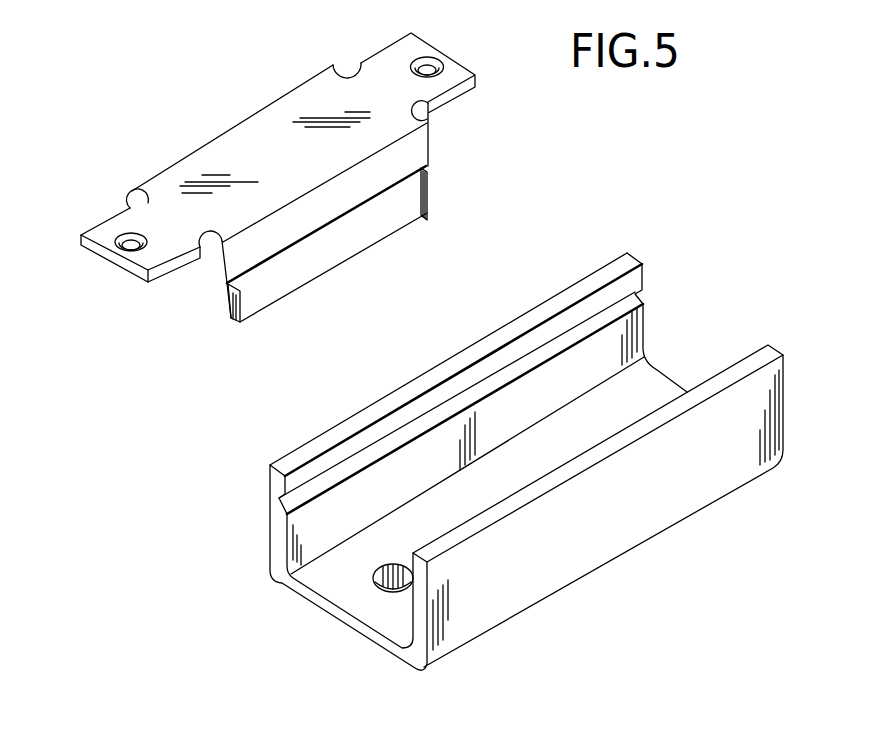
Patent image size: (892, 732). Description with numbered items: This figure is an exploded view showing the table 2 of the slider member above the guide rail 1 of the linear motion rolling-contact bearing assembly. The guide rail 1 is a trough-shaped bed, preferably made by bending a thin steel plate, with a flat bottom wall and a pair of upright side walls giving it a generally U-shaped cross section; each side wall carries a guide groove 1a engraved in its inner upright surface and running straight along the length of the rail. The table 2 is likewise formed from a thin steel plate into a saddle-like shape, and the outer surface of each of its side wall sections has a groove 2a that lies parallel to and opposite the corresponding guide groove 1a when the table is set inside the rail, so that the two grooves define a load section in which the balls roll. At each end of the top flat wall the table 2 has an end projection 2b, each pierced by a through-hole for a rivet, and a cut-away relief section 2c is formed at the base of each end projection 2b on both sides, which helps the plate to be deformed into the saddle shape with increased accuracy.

The guide rail 1 is at (360, 420).
The guide groove 1a is at (520, 365).
The table 2 is at (233, 142).
The groove 2a is at (350, 212).
The end projection 2b is at (423, 50).
The relief section 2c is at (352, 77).